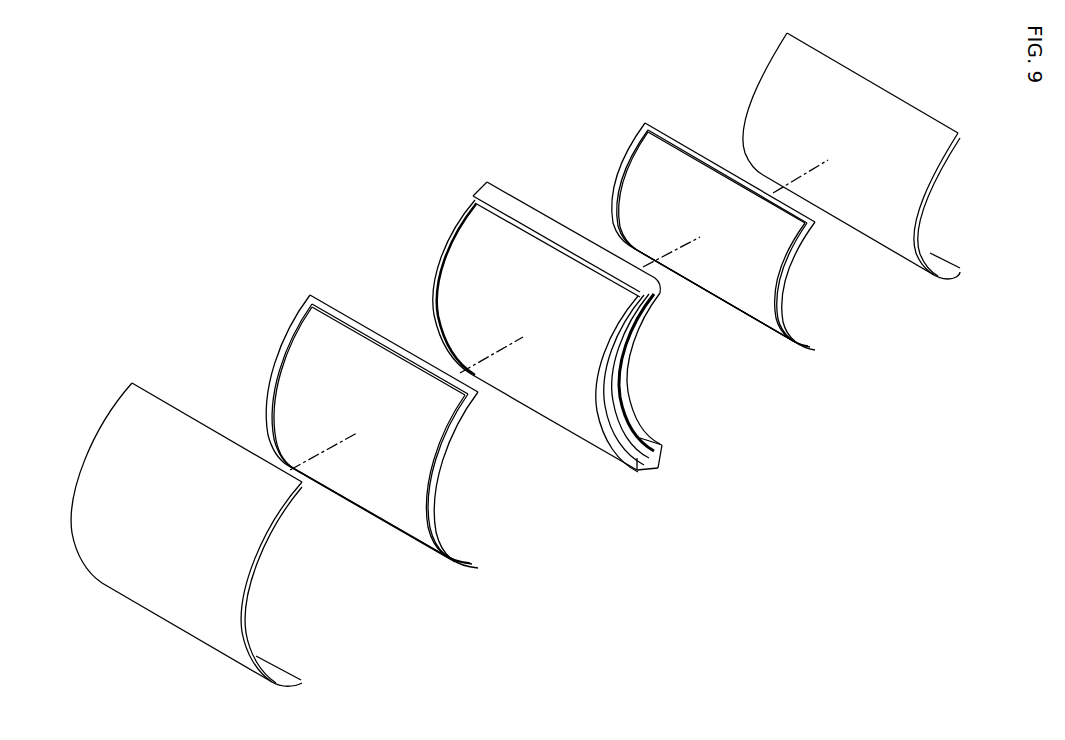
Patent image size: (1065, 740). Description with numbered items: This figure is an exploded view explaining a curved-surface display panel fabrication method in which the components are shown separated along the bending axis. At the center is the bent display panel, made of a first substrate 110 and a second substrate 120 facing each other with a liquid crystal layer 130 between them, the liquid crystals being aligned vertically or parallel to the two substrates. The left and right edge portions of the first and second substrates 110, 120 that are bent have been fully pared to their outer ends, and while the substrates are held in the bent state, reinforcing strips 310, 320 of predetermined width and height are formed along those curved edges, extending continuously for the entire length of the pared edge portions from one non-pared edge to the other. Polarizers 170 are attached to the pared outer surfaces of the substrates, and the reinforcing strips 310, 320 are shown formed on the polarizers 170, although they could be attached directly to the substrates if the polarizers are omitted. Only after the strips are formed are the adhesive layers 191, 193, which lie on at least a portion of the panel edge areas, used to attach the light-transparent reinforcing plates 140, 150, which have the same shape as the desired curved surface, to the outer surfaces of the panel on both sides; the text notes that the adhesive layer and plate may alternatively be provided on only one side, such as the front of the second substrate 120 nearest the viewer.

The first substrate 110 is at (658, 447).
The second substrate 120 is at (647, 470).
The liquid crystal layer 130 is at (613, 397).
The reinforcing plate 140 is at (960, 271).
The reinforcing plate 150 is at (303, 683).
The polarizer 170 is at (627, 337).
The adhesive layer 191 is at (763, 330).
The adhesive layer 193 is at (397, 525).
The reinforcing strip 310 is at (625, 372).
The reinforcing strip 320 is at (450, 243).